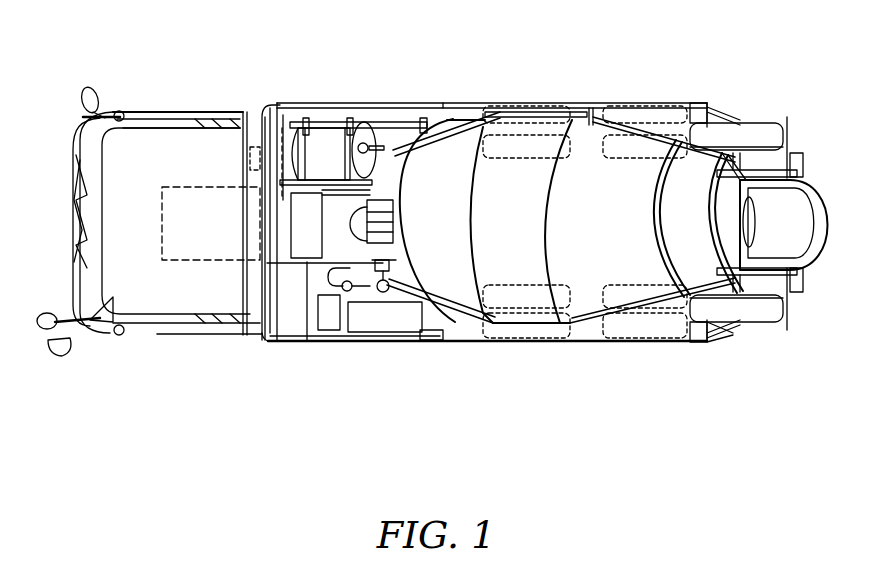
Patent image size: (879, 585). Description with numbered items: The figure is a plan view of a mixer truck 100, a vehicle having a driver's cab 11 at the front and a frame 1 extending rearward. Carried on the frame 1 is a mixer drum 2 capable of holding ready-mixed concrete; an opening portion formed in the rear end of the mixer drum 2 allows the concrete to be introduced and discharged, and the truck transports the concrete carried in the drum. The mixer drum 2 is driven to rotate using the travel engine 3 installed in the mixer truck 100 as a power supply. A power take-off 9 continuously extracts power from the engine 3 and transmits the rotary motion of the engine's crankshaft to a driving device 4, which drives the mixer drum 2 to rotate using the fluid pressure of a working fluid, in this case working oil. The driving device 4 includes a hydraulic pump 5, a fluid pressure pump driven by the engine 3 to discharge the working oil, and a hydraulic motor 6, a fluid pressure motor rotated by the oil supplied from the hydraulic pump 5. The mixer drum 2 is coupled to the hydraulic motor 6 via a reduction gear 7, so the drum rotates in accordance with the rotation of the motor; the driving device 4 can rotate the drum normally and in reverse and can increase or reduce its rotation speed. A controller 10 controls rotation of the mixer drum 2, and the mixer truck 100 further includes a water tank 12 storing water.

The mixer truck 100 is at (754, 76).
The frame 1 is at (457, 114).
The mixer drum 2 is at (525, 172).
The travel engine 3 is at (212, 184).
The driving device 4 is at (372, 406).
The hydraulic pump 5 is at (330, 224).
The hydraulic motor 6 is at (352, 215).
The reduction gear 7 is at (364, 140).
The power take-off 9 is at (282, 168).
The controller 10 is at (257, 112).
The driver's cab 11 is at (152, 138).
The water tank 12 is at (323, 138).